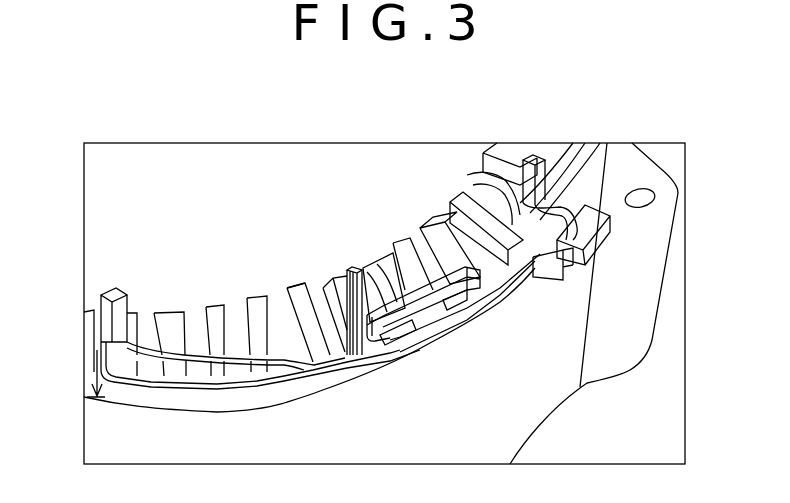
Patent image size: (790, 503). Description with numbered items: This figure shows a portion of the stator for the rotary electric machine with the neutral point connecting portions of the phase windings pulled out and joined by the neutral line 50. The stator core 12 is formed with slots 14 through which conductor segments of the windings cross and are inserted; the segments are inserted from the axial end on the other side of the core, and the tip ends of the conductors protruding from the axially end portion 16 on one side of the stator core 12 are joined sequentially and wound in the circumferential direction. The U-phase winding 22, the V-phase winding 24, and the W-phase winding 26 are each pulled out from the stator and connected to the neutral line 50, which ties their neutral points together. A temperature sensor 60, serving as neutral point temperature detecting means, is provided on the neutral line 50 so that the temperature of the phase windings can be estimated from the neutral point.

The stator core 12 is at (538, 410).
The slots 14 is at (289, 301).
The axially end portion on one side 16 is at (92, 383).
The U-phase winding 22 is at (530, 220).
The V-phase winding 24 is at (407, 307).
The W-phase winding 26 is at (191, 370).
The neutral line 50 is at (395, 350).
The temperature sensor 60 is at (580, 255).